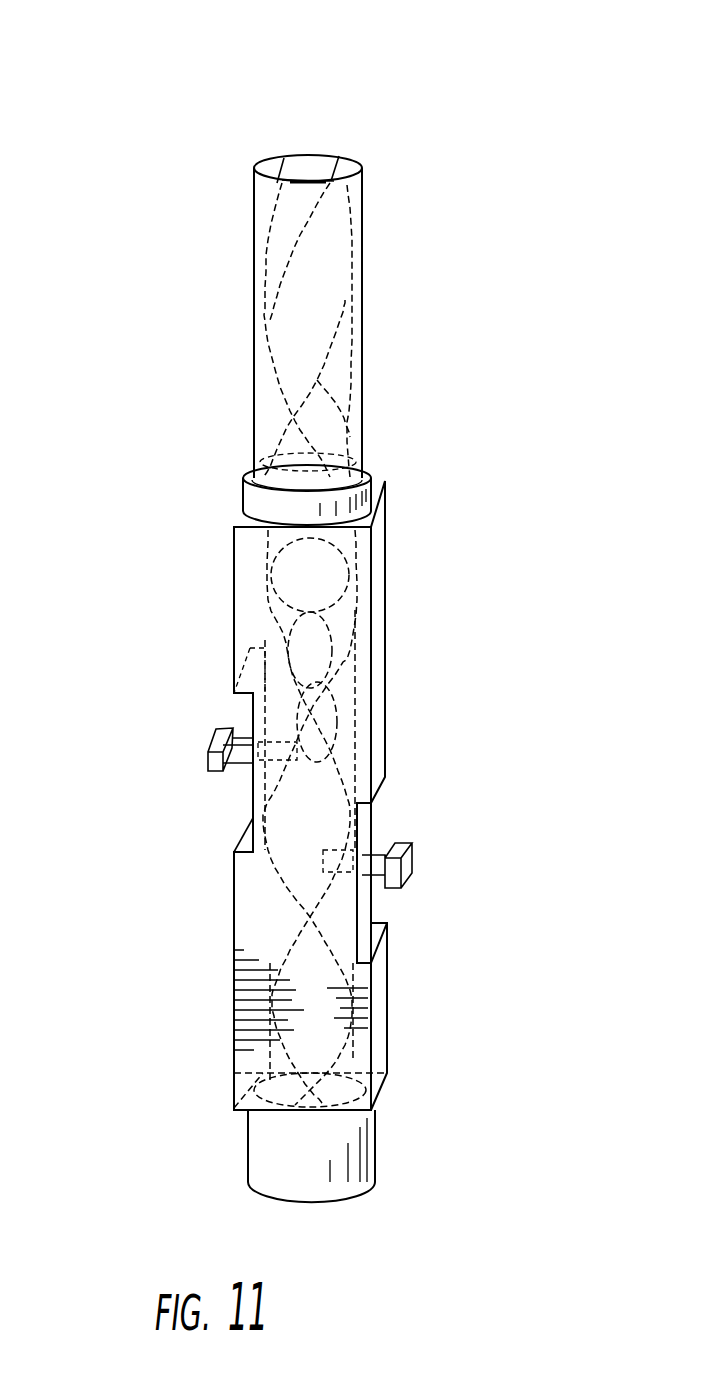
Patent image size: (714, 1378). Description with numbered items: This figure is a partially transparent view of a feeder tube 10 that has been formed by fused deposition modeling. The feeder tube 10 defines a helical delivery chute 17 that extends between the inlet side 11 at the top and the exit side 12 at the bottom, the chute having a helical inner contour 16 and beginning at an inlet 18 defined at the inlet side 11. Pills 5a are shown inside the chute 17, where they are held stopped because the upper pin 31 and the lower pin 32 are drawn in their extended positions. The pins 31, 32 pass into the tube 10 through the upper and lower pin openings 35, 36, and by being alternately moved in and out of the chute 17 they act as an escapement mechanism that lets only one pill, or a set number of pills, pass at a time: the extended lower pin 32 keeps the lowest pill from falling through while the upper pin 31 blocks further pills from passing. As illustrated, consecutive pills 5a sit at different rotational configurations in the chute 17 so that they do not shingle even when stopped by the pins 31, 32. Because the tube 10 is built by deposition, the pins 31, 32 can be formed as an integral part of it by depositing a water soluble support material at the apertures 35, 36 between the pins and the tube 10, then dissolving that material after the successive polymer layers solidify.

The feeder tube 10 is at (186, 128).
The inlet side 11 is at (356, 160).
The exit side 12 is at (348, 1198).
The helical inner contour 16 is at (270, 603).
The helical delivery chute 17 is at (356, 379).
The inlet 18 is at (313, 150).
The pills 5a is at (325, 573).
The upper pin 31 is at (207, 773).
The lower pin 32 is at (410, 862).
The upper pin opening 35 is at (233, 712).
The lower pin opening 36 is at (382, 834).